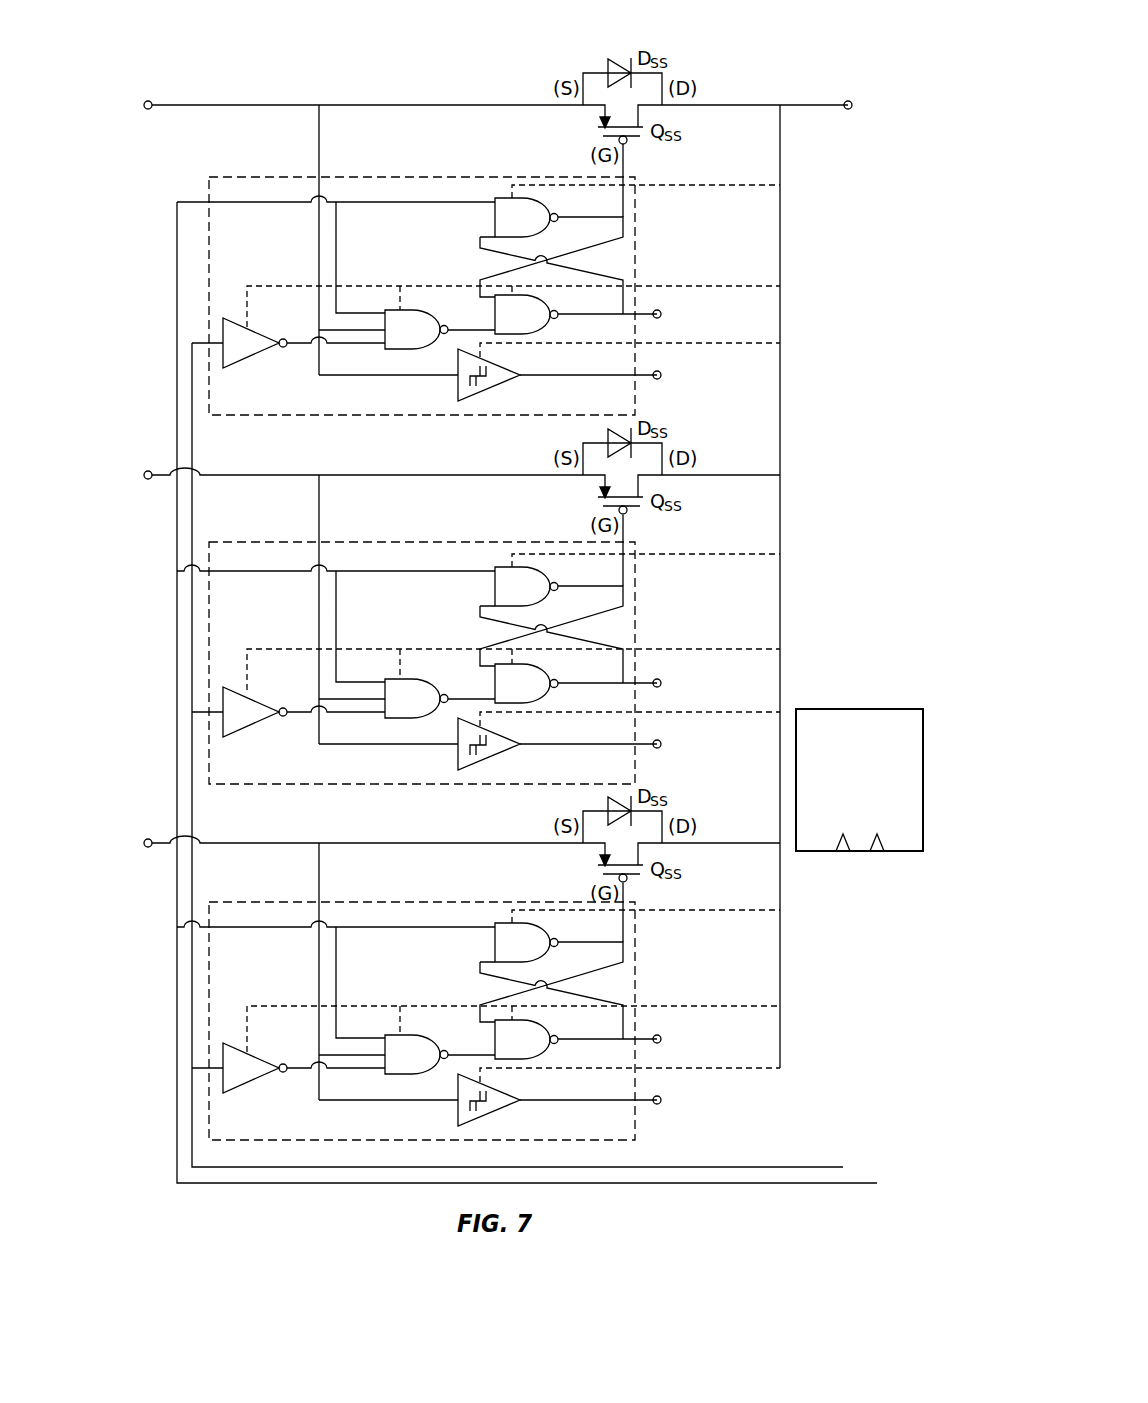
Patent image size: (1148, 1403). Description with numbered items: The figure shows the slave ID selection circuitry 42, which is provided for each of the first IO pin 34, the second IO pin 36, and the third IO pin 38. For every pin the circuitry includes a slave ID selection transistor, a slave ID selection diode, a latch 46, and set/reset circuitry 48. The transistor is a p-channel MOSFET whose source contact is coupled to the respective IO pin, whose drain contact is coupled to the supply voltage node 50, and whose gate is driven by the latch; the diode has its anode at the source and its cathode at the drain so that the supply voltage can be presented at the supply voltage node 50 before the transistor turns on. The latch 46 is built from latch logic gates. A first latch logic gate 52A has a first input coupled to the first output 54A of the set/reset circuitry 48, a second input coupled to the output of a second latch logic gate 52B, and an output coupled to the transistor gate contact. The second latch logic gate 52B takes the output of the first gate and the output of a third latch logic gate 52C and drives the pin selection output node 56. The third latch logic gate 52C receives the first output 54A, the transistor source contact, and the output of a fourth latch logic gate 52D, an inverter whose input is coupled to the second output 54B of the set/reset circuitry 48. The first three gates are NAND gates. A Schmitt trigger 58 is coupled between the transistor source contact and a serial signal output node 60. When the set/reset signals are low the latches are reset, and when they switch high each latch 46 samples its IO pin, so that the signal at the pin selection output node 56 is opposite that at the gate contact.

The first IO pin 34 is at (148, 101).
The second IO pin 36 is at (148, 470).
The third IO pin 38 is at (148, 838).
The slave ID selection circuitry 42 is at (336, 77).
The latch 46 is at (624, 408).
The set/reset circuitry 48 is at (872, 760).
The supply voltage node 50 is at (848, 110).
The first latch logic gate 52A is at (537, 226).
The second latch logic gate 52B is at (537, 323).
The third latch logic gate 52C is at (427, 339).
The fourth latch logic gate 52D is at (257, 333).
The first output 54A is at (884, 840).
The second output 54B is at (850, 840).
The pin selection output node 56 is at (660, 319).
The Schmitt trigger 58 is at (500, 386).
The serial signal output node 60 is at (660, 380).